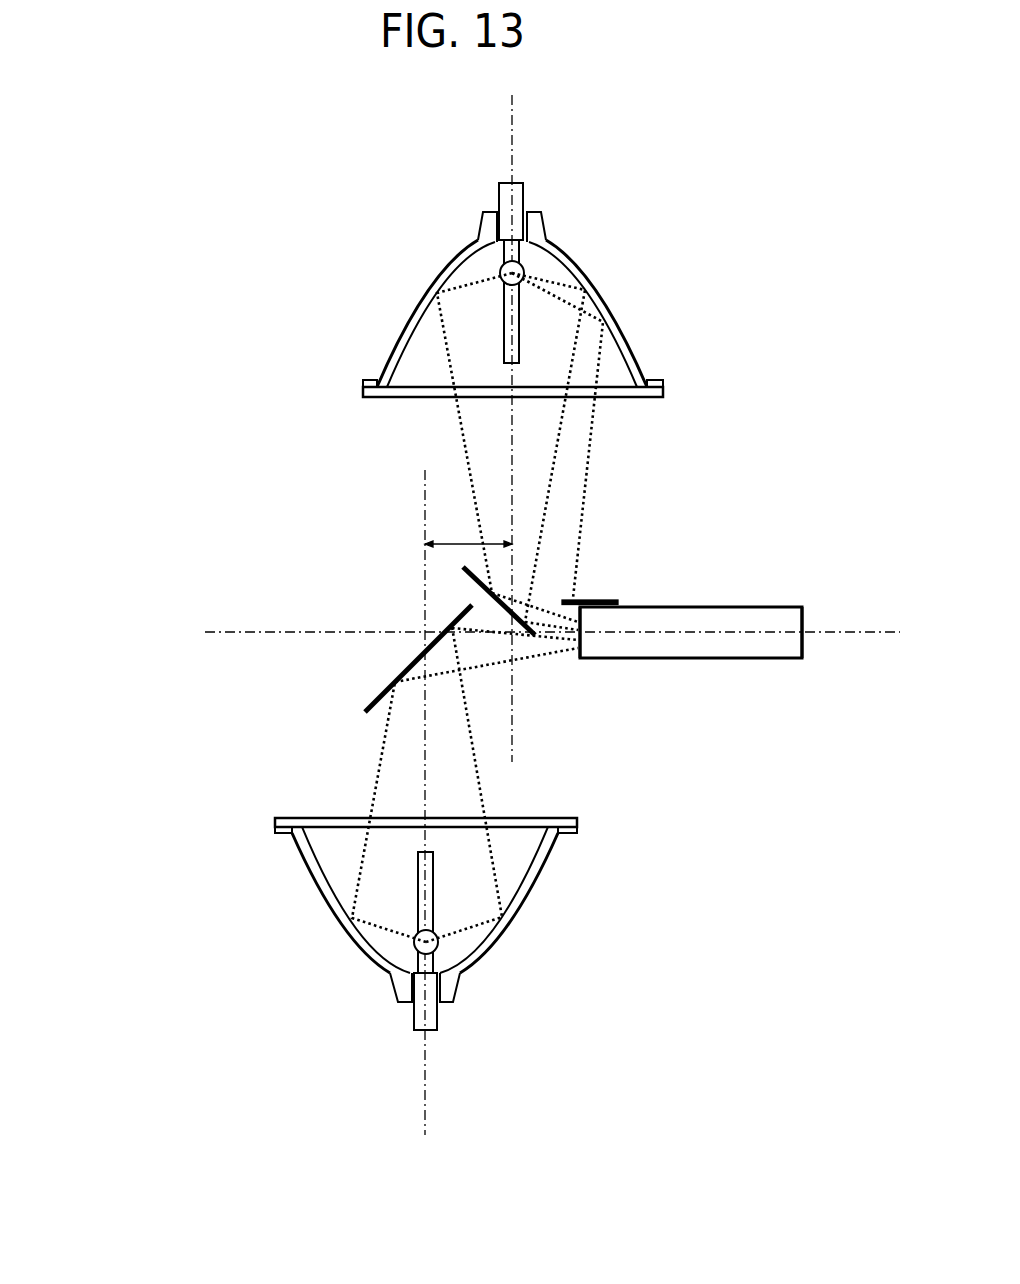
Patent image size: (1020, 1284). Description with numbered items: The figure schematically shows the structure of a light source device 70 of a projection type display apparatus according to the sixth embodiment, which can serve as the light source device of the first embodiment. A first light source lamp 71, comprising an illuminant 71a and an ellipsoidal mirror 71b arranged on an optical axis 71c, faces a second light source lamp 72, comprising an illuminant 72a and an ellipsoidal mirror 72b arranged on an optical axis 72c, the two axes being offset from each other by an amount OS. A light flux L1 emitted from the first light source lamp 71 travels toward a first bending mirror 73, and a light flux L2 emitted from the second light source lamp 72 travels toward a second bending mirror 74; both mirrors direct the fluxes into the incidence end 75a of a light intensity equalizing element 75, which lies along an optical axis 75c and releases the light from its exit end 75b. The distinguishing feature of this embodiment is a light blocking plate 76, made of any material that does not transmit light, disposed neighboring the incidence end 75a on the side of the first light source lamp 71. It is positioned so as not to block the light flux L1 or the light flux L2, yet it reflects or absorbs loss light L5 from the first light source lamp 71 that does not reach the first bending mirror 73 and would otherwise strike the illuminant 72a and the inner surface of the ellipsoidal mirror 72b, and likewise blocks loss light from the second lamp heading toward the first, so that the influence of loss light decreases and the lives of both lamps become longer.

The light source device 70 is at (118, 165).
The first light source lamp 71 is at (293, 370).
The illuminant 71a is at (500, 270).
The ellipsoidal mirror 71b is at (412, 313).
The optical axis 71c is at (510, 435).
The second light source lamp 72 is at (188, 849).
The illuminant 72a is at (414, 943).
The ellipsoidal mirror 72b is at (307, 870).
The optical axis 72c is at (425, 788).
The first bending mirror 73 is at (493, 597).
The second bending mirror 74 is at (412, 665).
The light intensity equalizing element 75 is at (800, 600).
The incidence end 75a is at (578, 660).
The exit end 75b is at (805, 660).
The optical axis 75c is at (833, 633).
The light blocking plate 76 is at (590, 601).
The offset amount OS is at (460, 543).
The light flux L1 is at (563, 420).
The light flux L2 is at (478, 778).
The loss light L5 is at (587, 485).